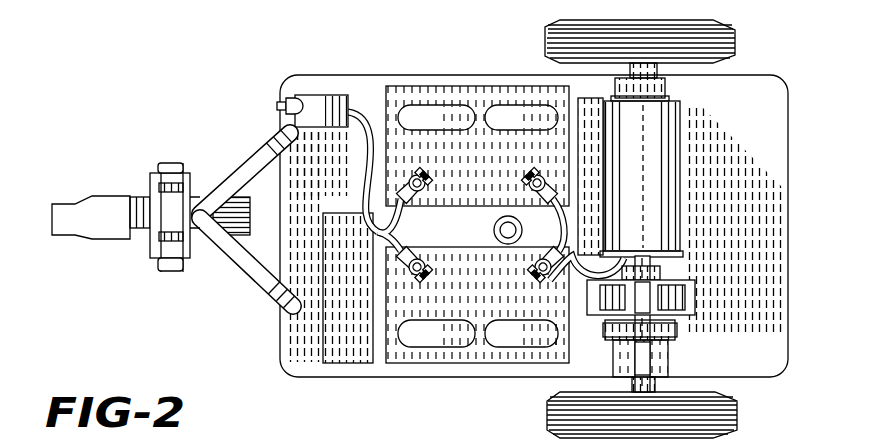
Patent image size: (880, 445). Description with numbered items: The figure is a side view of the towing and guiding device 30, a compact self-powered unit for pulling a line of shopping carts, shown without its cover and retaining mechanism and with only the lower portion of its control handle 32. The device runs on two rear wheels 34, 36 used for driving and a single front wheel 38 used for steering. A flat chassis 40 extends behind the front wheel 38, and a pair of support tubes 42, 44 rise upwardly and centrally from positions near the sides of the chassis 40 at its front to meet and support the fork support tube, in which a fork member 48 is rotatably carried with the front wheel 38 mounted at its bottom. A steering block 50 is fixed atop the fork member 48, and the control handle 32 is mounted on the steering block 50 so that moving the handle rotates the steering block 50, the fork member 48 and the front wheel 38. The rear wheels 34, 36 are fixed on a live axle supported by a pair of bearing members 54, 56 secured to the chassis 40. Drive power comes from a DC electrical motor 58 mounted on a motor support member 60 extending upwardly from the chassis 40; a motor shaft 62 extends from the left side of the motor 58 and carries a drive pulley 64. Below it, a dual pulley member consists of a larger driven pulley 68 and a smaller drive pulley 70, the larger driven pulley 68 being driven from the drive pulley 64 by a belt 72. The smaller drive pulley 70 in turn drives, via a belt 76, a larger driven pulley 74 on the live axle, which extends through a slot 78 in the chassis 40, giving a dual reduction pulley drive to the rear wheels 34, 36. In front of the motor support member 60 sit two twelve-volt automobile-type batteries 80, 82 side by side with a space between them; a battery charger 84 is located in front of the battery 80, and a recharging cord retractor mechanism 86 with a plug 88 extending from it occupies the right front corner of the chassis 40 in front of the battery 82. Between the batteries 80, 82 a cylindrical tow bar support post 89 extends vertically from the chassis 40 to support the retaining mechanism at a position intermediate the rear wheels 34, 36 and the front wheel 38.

The towing and guiding device 30 is at (293, 379).
The control handle 32 is at (82, 228).
The rear wheel 34 is at (733, 416).
The rear wheel 36 is at (733, 43).
The front wheel 38 is at (253, 210).
The chassis 40 is at (762, 88).
The support tube 42 is at (257, 274).
The support tube 44 is at (249, 160).
The fork member 48 is at (152, 247).
The steering block 50 is at (143, 213).
The bearing member 54 is at (668, 362).
The bearing member 56 is at (665, 89).
The DC electrical motor 58 is at (665, 152).
The motor support member 60 is at (590, 122).
The motor shaft 62 is at (667, 275).
The drive pulley 64 is at (658, 330).
The larger driven pulley 68 is at (630, 344).
The smaller drive pulley 70 is at (675, 283).
The belt 72 is at (618, 323).
The larger driven pulley 74 is at (686, 315).
The belt 76 is at (687, 284).
The slot 78 is at (587, 293).
The battery 80 is at (413, 355).
The battery 82 is at (493, 95).
The battery charger 84 is at (342, 350).
The recharging cord retractor mechanism 86 is at (323, 107).
The plug 88 is at (293, 101).
The tow bar support post 89 is at (493, 231).